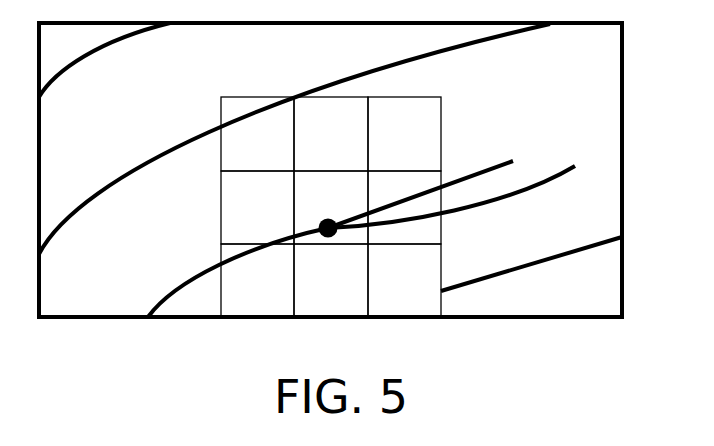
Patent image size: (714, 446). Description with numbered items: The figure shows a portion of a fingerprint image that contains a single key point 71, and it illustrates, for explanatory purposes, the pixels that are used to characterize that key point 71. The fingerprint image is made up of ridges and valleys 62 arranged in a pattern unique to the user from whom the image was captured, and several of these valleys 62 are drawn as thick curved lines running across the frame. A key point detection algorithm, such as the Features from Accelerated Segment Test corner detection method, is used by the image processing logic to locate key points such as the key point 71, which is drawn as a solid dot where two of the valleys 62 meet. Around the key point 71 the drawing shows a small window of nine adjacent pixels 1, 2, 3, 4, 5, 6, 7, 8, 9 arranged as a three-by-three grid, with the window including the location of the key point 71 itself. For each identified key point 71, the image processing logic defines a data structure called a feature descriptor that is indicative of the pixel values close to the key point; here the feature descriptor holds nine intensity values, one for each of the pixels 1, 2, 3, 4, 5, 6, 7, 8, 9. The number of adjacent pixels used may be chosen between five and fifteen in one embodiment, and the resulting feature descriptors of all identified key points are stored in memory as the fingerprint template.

The adjacent pixel 1 is at (246, 96).
The adjacent pixel 2 is at (354, 96).
The adjacent pixel 3 is at (442, 143).
The adjacent pixel 4 is at (220, 188).
The adjacent pixel 5 is at (290, 182).
The adjacent pixel 6 is at (443, 232).
The adjacent pixel 7 is at (220, 305).
The adjacent pixel 8 is at (293, 305).
The adjacent pixel 9 is at (367, 305).
The valleys 62 is at (127, 171).
The key point 71 is at (328, 217).